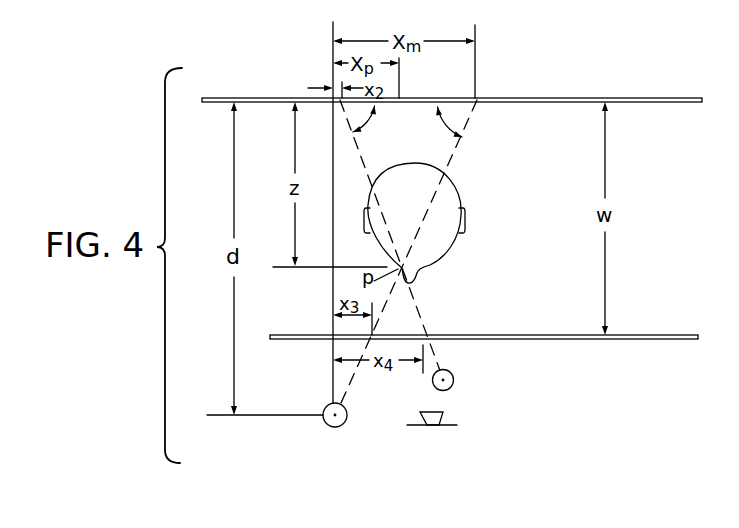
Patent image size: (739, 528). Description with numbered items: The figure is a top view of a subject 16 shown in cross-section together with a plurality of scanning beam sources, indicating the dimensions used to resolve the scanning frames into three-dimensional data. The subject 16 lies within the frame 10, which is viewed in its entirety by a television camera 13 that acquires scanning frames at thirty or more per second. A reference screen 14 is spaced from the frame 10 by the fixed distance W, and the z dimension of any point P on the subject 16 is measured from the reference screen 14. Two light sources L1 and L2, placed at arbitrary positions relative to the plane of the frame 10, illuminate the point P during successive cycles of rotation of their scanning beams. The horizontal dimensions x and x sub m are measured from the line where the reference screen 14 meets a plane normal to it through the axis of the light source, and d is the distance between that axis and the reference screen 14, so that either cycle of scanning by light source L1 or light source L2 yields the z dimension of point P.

The frame 10 is at (515, 335).
The television camera 13 is at (435, 427).
The reference screen 14 is at (547, 98).
The subject 16 is at (450, 197).
The light source L1 is at (328, 427).
The light source L2 is at (454, 378).